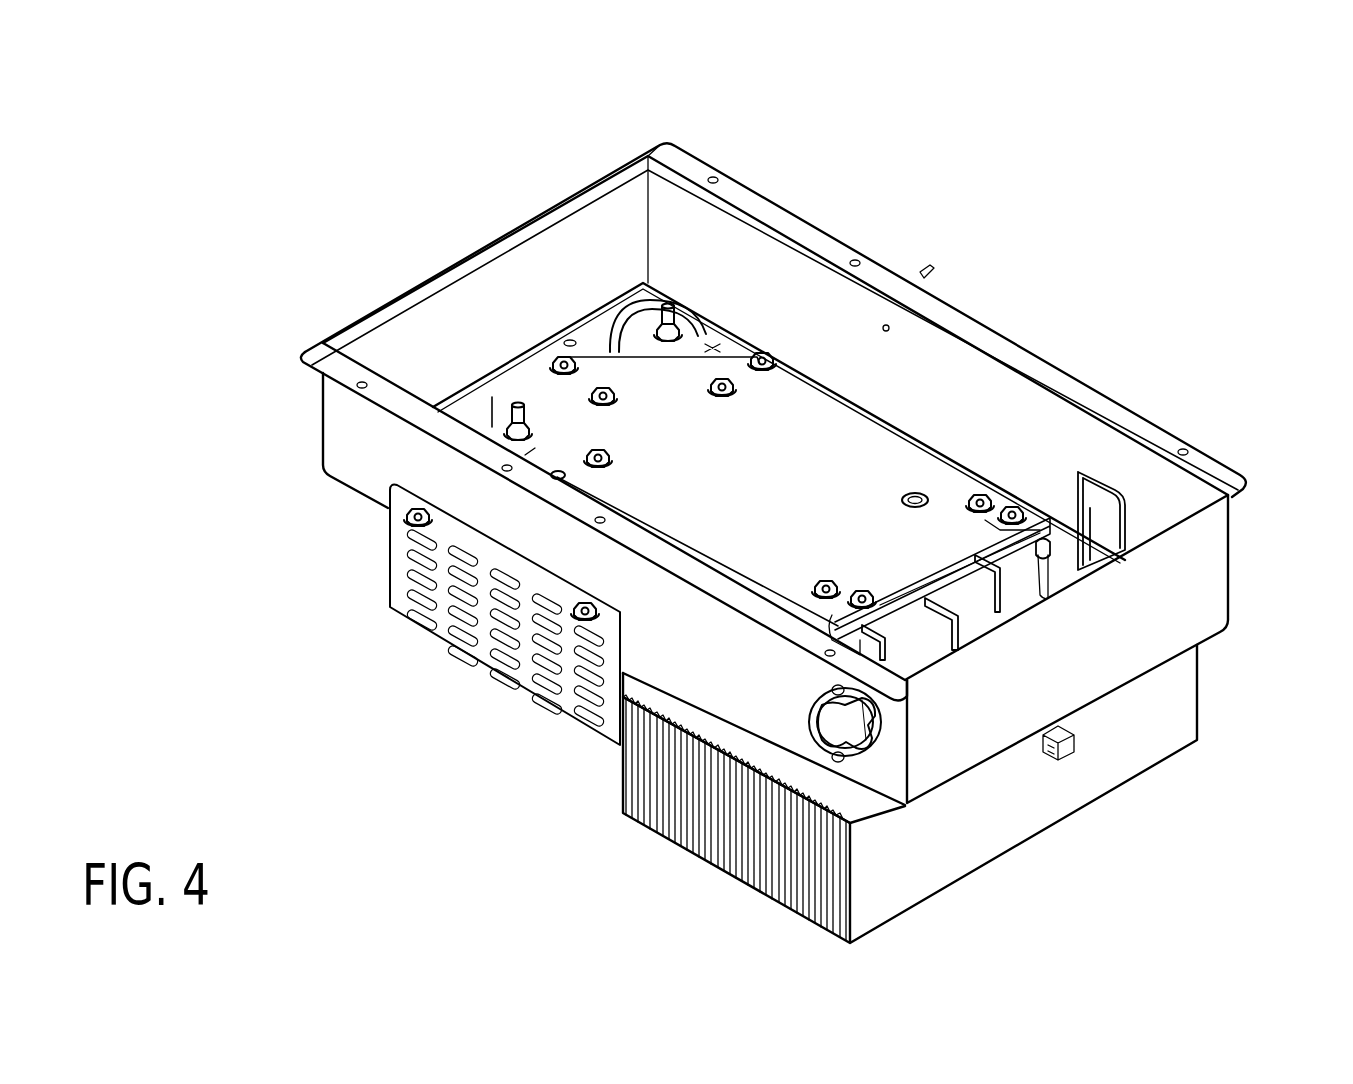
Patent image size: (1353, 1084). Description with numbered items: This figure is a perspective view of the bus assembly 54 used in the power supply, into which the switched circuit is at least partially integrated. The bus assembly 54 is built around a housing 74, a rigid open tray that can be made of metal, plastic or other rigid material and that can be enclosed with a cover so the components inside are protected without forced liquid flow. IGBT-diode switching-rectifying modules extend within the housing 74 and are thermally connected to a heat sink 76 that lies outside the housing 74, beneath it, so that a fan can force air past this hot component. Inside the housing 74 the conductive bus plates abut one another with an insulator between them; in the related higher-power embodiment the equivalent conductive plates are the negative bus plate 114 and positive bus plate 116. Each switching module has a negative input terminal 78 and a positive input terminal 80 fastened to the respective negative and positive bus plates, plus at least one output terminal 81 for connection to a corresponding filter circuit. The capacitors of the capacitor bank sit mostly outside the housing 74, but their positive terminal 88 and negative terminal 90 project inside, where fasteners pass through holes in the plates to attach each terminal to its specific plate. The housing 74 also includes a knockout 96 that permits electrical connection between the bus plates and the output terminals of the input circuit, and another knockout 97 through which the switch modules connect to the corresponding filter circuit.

The bus assembly 54 is at (1152, 236).
The housing 74 is at (1222, 558).
The heat sink 76 is at (1128, 768).
The negative input terminal 78 is at (872, 592).
The positive input terminal 80 is at (826, 580).
The output terminal 81 is at (880, 638).
The positive terminal 88 is at (614, 398).
The negative terminal 90 is at (556, 358).
The knockout 96 is at (622, 298).
The knockout 97 is at (836, 712).
The negative bus plate 114 is at (877, 438).
The positive bus plate 116 is at (697, 328).